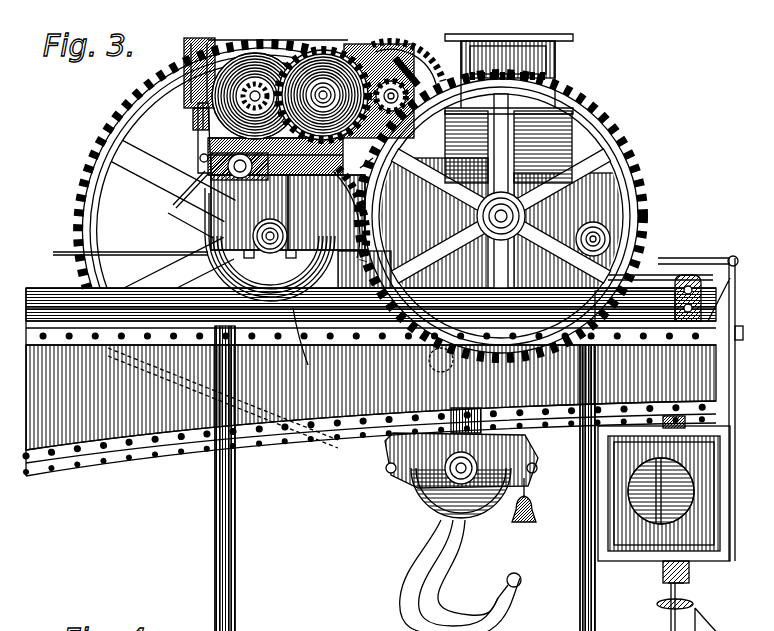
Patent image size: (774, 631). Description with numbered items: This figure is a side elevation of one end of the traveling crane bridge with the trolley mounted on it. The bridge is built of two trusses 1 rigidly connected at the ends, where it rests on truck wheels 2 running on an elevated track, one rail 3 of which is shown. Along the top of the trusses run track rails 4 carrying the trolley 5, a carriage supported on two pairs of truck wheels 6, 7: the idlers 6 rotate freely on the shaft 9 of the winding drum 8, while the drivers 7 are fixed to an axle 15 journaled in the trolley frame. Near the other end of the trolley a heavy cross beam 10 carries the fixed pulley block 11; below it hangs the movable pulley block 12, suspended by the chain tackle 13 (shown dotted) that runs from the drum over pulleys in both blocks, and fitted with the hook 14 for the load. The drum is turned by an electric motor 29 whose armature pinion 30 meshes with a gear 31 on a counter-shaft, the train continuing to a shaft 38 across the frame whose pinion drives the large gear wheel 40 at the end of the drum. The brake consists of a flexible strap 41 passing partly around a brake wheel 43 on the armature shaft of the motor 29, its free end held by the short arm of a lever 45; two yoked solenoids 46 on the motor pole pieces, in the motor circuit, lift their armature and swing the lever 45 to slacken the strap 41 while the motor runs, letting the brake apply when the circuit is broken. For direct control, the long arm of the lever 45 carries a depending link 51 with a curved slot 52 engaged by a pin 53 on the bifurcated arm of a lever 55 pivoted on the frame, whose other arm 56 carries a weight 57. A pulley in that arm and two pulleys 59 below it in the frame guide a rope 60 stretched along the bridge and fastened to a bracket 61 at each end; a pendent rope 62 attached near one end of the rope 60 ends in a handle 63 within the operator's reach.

The truss 1 is at (371, 382).
The truck wheel 2 is at (684, 571).
The rail 3 is at (652, 592).
The track rail 4 is at (660, 290).
The trolley 5 is at (358, 48).
The truck wheels 6 is at (302, 346).
The truck wheels 7 is at (648, 250).
The winding drum 8 is at (160, 205).
The shaft 9 is at (270, 236).
The cross beam 10 is at (530, 52).
The fixed pulley block 11 is at (509, 147).
The movable pulley block 12 is at (400, 470).
The chain tackle 13 is at (500, 388).
The hook 14 is at (395, 597).
The axle 15 is at (580, 216).
The electric motor 29 is at (386, 70).
The pinion 30 is at (244, 86).
The gear 31 is at (326, 109).
The shaft 38 is at (514, 216).
The large gear wheel 40 is at (72, 172).
The flexible strap 41 is at (193, 132).
The brake wheel 43 is at (262, 32).
The lever 45 is at (132, 90).
The solenoids 46 is at (177, 45).
The depending link 51 is at (188, 124).
The curved slot 52 is at (175, 182).
The pin 53 is at (215, 158).
The lever 55 is at (249, 212).
The arm 56 is at (327, 214).
The weight 57 is at (360, 154).
The pulleys 59 is at (195, 232).
The rope 60 is at (55, 246).
The bracket 61 is at (727, 285).
The pendent rope 62 is at (530, 486).
The handle 63 is at (518, 516).